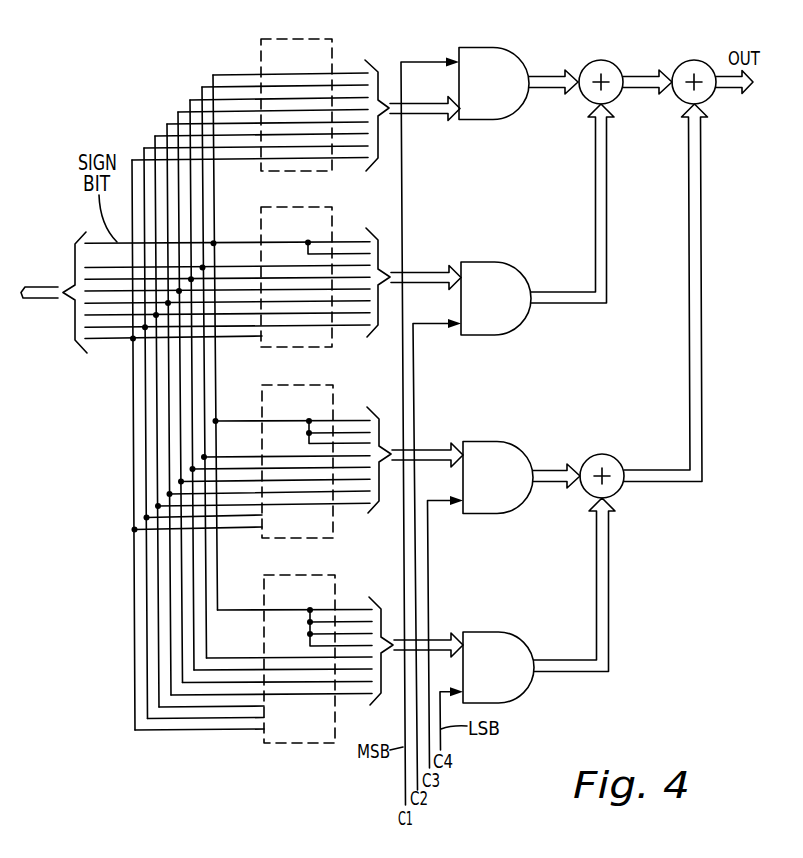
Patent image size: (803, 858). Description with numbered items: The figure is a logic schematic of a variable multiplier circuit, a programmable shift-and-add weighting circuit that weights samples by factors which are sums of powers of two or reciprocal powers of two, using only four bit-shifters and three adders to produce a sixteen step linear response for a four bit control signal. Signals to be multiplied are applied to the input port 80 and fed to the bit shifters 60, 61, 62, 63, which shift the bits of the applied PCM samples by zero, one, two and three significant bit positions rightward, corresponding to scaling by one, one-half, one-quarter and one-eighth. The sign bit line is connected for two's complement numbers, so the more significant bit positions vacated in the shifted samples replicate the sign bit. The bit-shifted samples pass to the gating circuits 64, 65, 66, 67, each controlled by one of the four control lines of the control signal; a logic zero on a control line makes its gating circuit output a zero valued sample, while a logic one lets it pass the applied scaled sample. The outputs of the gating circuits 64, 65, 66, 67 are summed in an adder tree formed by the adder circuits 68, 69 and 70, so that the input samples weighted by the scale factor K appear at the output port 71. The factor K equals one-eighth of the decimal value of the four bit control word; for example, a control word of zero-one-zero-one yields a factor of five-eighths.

The bit shifter 60 is at (333, 40).
The bit shifter 61 is at (333, 213).
The bit shifter 62 is at (334, 386).
The bit shifter 63 is at (335, 577).
The gating circuit 64 is at (505, 45).
The gating circuit 65 is at (508, 262).
The gating circuit 66 is at (508, 441).
The gating circuit 67 is at (505, 632).
The adder circuit 68 is at (607, 60).
The adder circuit 69 is at (603, 454).
The adder circuit 70 is at (680, 60).
The output port 71 is at (732, 95).
The input port 80 is at (40, 300).